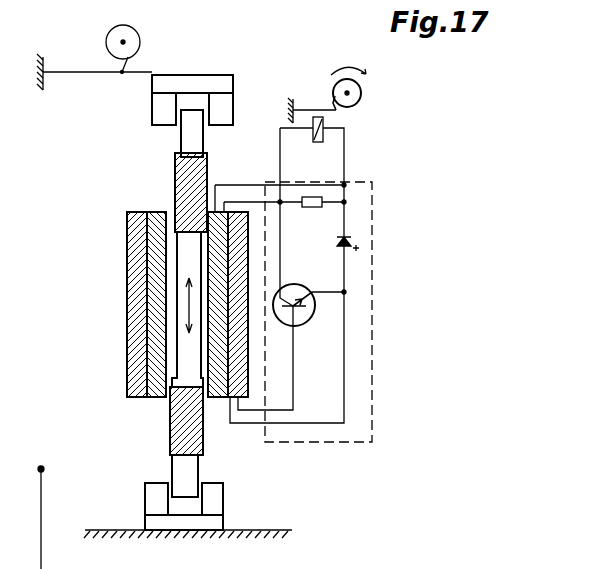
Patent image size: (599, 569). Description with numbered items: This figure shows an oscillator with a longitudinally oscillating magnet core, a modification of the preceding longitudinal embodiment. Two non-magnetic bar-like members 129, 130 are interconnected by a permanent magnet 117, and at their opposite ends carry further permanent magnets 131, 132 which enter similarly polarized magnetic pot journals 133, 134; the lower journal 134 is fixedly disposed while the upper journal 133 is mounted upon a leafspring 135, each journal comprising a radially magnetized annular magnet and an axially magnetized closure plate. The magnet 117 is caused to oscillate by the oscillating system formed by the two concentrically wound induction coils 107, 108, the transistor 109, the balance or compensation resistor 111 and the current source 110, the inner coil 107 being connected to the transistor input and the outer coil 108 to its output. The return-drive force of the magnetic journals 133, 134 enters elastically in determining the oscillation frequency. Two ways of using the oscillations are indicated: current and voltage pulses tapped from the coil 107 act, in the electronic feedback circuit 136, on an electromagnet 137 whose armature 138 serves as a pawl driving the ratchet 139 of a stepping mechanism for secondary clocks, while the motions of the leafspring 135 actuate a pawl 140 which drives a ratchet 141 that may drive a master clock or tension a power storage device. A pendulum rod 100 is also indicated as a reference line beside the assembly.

The pendulum rod 100 is at (41, 510).
The inner coil 107 is at (150, 258).
The outer coil 108 is at (141, 286).
The transistor 109 is at (308, 312).
The current source 110 is at (340, 247).
The ohmic resistance 111 is at (312, 208).
The permanent magnet 117 is at (182, 344).
The non-magnetic barlike member 129 is at (175, 184).
The non-magnetic barlike member 130 is at (176, 428).
The permanent magnet 131 is at (181, 144).
The permanent magnet 132 is at (176, 472).
The magnetic pot journal 133 is at (150, 108).
The magnetic pot journal 134 is at (145, 507).
The leafspring 135 is at (75, 71).
The electronic feedback circuit 136 is at (374, 275).
The electromagnet 137 is at (326, 120).
The armature 138 is at (307, 104).
The ratchet 139 is at (362, 88).
The pawl 140 is at (132, 64).
The ratchet 141 is at (140, 35).